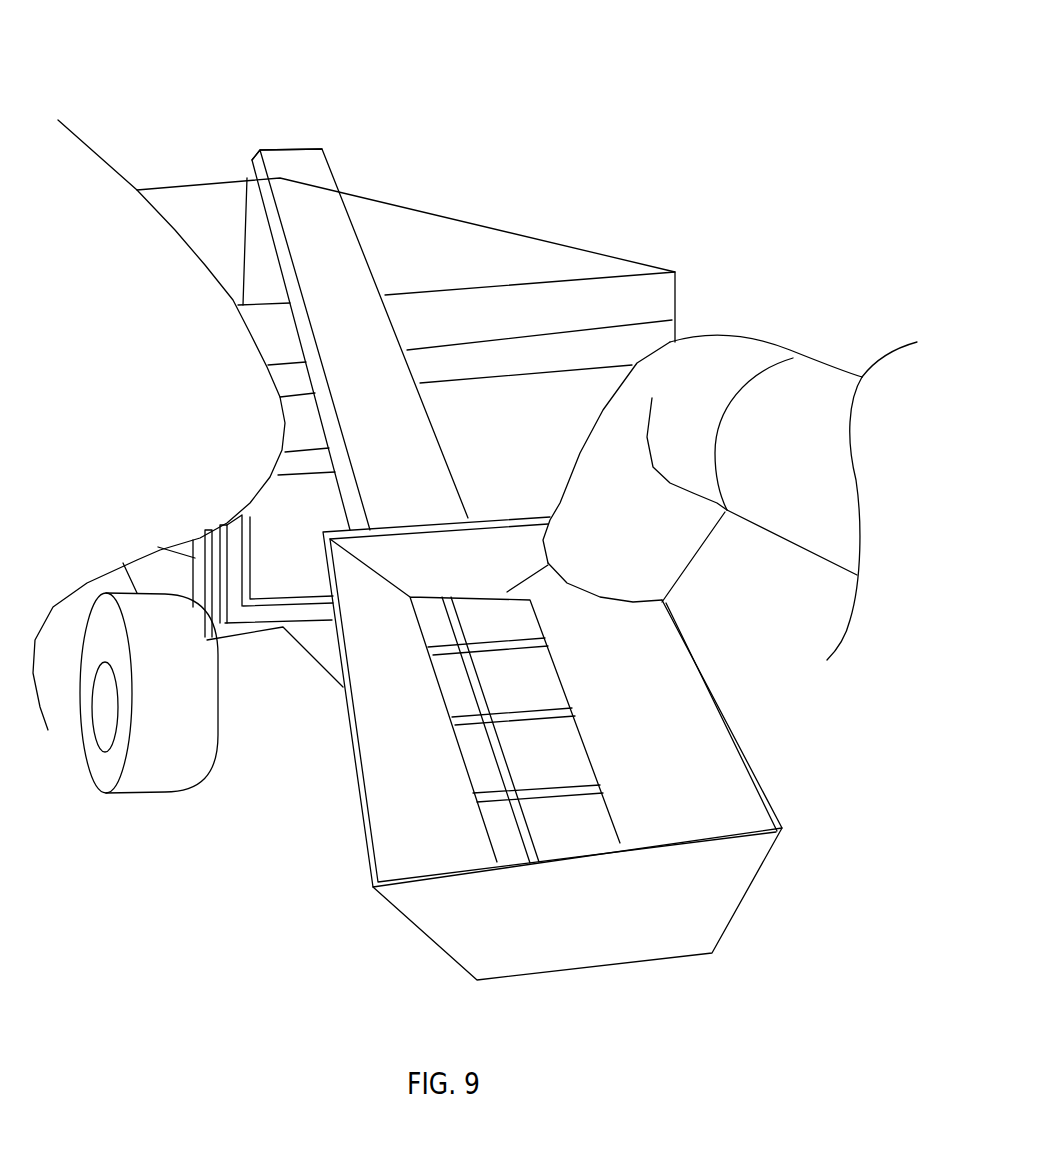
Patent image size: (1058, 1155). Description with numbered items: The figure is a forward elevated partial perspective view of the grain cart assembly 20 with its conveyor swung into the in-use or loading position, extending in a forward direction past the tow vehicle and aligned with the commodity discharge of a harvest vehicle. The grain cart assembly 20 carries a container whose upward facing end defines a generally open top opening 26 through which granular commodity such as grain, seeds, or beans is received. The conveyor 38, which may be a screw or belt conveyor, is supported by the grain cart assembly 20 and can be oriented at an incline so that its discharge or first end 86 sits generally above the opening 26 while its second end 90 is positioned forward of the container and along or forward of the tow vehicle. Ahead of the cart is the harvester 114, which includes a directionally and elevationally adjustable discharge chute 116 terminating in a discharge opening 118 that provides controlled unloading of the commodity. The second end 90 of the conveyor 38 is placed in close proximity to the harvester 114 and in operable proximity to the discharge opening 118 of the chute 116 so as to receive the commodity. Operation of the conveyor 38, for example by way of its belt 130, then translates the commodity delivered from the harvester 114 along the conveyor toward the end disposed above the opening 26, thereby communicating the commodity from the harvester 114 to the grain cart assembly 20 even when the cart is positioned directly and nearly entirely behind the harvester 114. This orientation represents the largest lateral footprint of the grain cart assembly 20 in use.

The grain cart assembly 20 is at (660, 80).
The top opening 26 is at (475, 250).
The conveyor 38 is at (315, 197).
The first end 86 is at (292, 148).
The second end 90 is at (583, 940).
The harvester 114 is at (843, 510).
The discharge chute 116 is at (812, 373).
The discharge opening 118 is at (588, 598).
The belt 130 is at (477, 727).